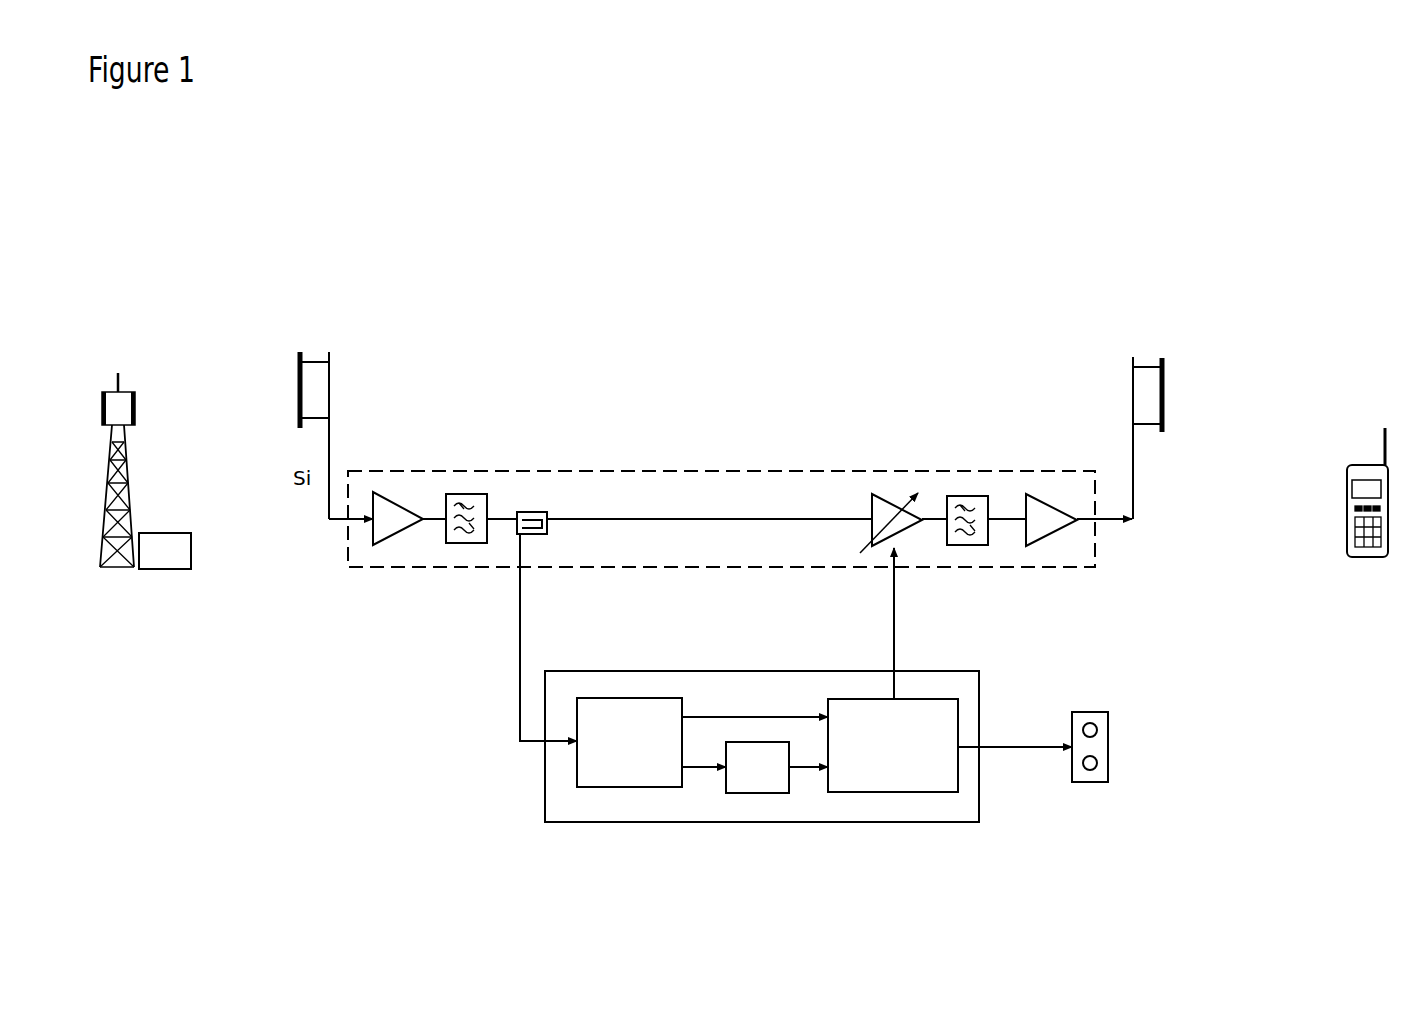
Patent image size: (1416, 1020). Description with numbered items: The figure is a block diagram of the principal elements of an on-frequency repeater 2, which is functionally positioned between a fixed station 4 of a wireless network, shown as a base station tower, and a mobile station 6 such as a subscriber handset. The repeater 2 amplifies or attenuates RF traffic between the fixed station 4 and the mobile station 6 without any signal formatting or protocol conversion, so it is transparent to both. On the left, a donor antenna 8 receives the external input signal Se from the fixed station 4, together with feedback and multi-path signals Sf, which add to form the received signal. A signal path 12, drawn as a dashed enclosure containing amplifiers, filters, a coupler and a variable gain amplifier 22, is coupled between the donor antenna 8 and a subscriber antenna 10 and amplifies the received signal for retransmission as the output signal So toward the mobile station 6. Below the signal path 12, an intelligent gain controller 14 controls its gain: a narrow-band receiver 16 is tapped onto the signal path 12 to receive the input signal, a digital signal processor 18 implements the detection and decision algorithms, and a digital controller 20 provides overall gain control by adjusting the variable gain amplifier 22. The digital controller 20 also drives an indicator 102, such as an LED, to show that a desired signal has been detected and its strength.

The repeater 2 is at (483, 215).
The fixed station 4 is at (170, 569).
The mobile station 6 is at (1347, 498).
The donor antenna 8 is at (330, 393).
The subscriber antenna 10 is at (1133, 390).
The signal path 12 is at (692, 471).
The intelligent gain controller 14 is at (727, 671).
The narrow-band receiver 16 is at (652, 788).
The digital signal processor 18 is at (765, 793).
The digital controller 20 is at (878, 793).
The variable gain amplifier 22 is at (872, 494).
The indicator 102 is at (1097, 712).
The external input signal Se is at (280, 383).
The feedback and multi-path signals Sf is at (280, 352).
The output signal So is at (1197, 383).